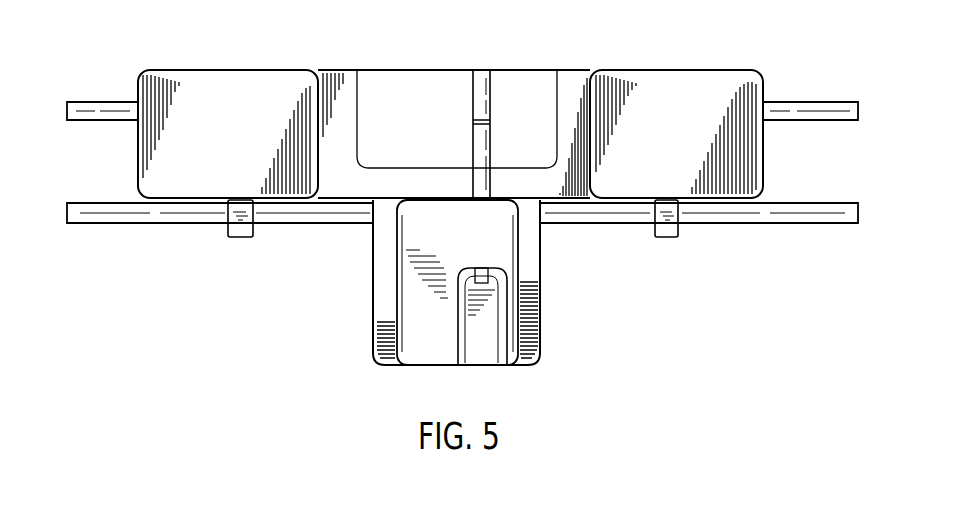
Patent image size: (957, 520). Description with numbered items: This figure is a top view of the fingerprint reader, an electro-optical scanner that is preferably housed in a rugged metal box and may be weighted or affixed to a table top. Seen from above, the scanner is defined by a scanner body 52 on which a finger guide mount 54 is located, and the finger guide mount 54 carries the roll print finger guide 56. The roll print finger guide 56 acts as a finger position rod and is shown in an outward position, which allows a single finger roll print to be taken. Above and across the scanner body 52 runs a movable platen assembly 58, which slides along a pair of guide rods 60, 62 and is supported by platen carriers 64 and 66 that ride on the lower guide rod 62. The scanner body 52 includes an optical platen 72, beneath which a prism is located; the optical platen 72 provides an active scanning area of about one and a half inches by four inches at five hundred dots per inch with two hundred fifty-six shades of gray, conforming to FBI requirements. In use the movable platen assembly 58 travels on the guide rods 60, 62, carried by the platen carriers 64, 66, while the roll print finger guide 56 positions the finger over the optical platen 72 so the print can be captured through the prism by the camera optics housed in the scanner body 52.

The scanner body 52 is at (535, 323).
The finger guide mount 54 is at (508, 257).
The roll print finger guide 56 is at (482, 90).
The movable platen assembly 58 is at (662, 88).
The guide rod 60 is at (808, 113).
The guide rod 62 is at (791, 212).
The platen carrier 64 is at (668, 238).
The platen carrier 66 is at (240, 238).
The optical platen 72 is at (408, 87).